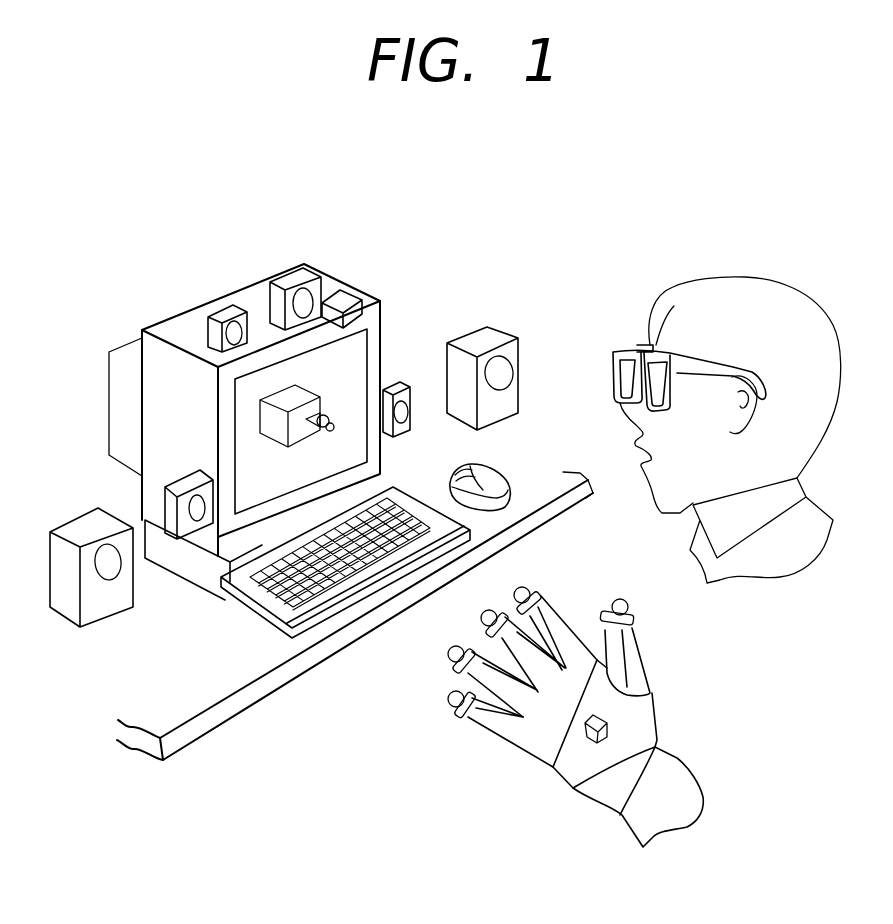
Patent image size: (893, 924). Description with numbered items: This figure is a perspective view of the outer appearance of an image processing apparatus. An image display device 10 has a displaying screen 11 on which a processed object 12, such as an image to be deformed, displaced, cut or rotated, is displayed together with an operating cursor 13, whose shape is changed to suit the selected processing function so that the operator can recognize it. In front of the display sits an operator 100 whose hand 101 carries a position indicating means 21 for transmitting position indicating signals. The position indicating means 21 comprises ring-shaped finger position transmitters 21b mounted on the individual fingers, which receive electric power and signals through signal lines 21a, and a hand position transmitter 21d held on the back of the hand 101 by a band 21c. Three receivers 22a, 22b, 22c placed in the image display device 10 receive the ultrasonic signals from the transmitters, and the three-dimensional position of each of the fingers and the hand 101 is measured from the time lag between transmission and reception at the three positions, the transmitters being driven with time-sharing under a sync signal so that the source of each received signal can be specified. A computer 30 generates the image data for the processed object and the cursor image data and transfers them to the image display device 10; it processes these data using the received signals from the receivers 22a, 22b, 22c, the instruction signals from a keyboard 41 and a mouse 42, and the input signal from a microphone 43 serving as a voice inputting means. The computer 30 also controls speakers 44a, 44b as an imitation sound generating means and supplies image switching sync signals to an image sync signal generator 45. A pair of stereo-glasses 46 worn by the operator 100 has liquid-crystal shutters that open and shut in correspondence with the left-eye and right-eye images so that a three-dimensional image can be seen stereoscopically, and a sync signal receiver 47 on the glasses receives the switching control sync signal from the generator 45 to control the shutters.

The image display device 10 is at (162, 320).
The displaying screen 11 is at (382, 330).
The processed object 12 is at (278, 448).
The operating cursor 13 is at (322, 418).
The position indicating means 21 is at (518, 741).
The signal lines 21a is at (517, 743).
The finger position transmitters 21b is at (458, 715).
The band 21c is at (563, 763).
The hand position transmitter 21d is at (577, 794).
The receiver 22a is at (178, 487).
The receiver 22b is at (297, 273).
The receiver 22c is at (397, 383).
The computer 30 is at (190, 590).
The keyboard 41 is at (365, 580).
The mouse 42 is at (503, 490).
The microphone 43 is at (225, 313).
The speaker 44a is at (90, 522).
The speaker 44b is at (485, 330).
The image sync signal generator 45 is at (338, 297).
The stereo-glasses 46 is at (620, 350).
The sync signal receiver 47 is at (675, 304).
The operator 100 is at (773, 567).
The hand 101 is at (622, 782).